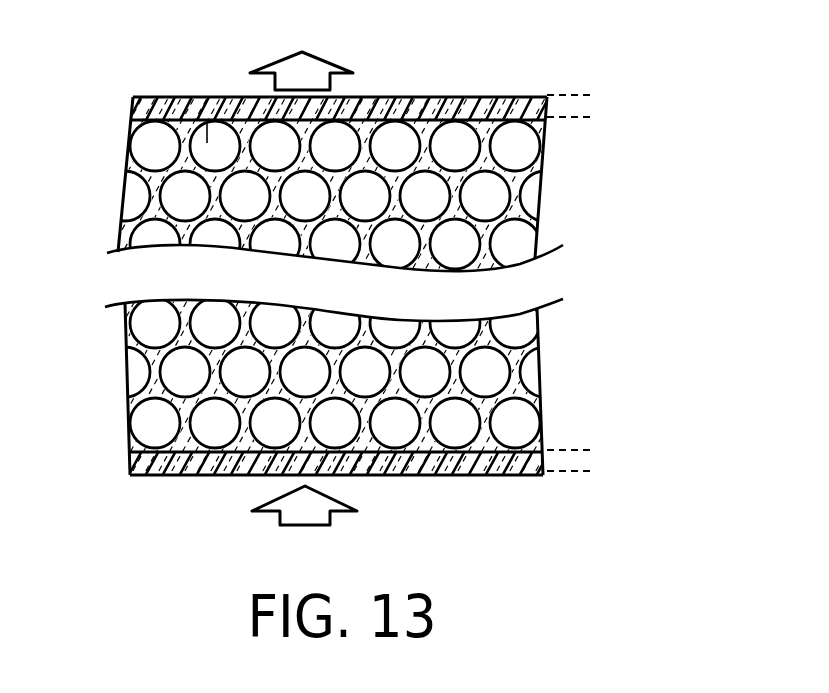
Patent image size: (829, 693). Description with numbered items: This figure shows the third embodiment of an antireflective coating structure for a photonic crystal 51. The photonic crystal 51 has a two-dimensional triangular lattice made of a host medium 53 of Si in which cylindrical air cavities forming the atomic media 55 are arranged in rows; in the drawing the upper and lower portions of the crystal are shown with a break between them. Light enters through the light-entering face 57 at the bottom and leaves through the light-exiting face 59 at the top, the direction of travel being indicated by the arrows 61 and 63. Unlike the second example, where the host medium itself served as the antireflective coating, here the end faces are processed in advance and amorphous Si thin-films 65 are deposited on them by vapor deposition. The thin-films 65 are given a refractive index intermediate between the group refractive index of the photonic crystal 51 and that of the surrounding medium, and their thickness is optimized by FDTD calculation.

The photonic crystal 51 is at (172, 276).
The host medium 53 is at (128, 405).
The atomic media 55 is at (183, 200).
The light-entering face 57 is at (147, 477).
The light-exiting face 59 is at (185, 95).
The inward force arrow 61 is at (339, 509).
The outward force arrow 63 is at (343, 72).
The amorphous Si thin-film 65 is at (550, 110).